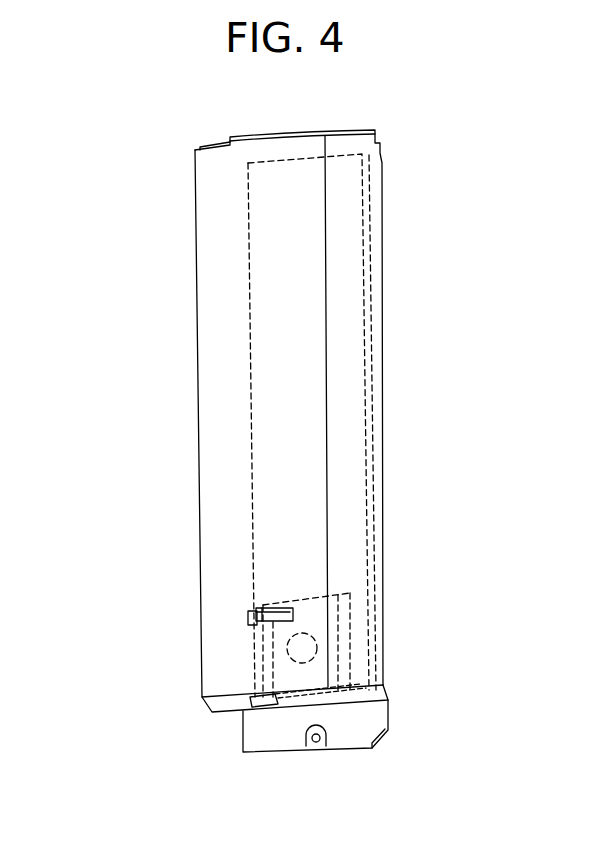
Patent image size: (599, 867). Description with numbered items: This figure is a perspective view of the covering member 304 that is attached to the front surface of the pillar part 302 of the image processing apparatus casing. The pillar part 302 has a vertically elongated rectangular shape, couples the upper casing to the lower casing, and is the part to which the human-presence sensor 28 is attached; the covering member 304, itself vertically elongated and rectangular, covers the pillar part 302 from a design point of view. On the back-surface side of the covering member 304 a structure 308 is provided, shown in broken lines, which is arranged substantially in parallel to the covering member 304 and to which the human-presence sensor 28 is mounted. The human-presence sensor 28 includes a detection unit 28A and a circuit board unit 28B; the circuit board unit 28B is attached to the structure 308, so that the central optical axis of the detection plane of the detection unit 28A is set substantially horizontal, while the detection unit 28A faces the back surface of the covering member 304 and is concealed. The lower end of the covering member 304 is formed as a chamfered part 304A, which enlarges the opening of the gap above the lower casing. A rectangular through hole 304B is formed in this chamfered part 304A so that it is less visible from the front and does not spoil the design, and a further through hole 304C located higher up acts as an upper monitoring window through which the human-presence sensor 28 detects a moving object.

The pillar part 302 is at (390, 193).
The covering member 304 is at (213, 331).
The structure 308 is at (372, 293).
The human-presence sensor 28 is at (446, 603).
The detection unit 28A is at (315, 641).
The circuit board unit 28B is at (368, 663).
The chamfered part 304A is at (220, 703).
The through hole 304B is at (277, 704).
The through hole 304C is at (250, 622).